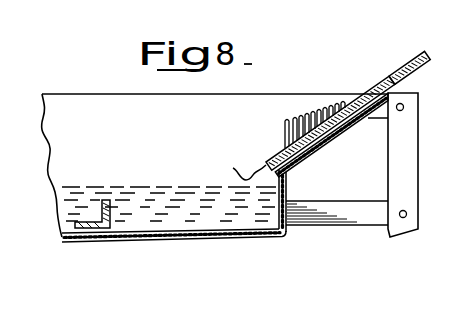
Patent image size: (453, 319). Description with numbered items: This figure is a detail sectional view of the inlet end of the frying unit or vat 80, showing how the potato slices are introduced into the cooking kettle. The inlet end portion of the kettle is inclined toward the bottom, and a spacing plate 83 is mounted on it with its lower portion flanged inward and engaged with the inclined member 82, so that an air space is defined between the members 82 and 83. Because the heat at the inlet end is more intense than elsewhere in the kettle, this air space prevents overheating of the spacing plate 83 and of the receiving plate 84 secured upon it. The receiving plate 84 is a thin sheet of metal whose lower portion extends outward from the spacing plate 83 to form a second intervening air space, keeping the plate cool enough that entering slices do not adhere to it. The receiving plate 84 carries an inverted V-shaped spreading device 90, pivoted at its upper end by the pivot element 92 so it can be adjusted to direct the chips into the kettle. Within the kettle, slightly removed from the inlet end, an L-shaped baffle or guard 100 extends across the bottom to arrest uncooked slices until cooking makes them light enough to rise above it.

The frying unit or vat 80 is at (215, 168).
The inclined inlet end portion member 82 is at (341, 135).
The spacing plate 83 is at (417, 69).
The receiving plate 84 is at (237, 169).
The spreading device 90 is at (296, 122).
The pivot element 92 is at (357, 98).
The L-shaped baffle or guard 100 is at (102, 218).